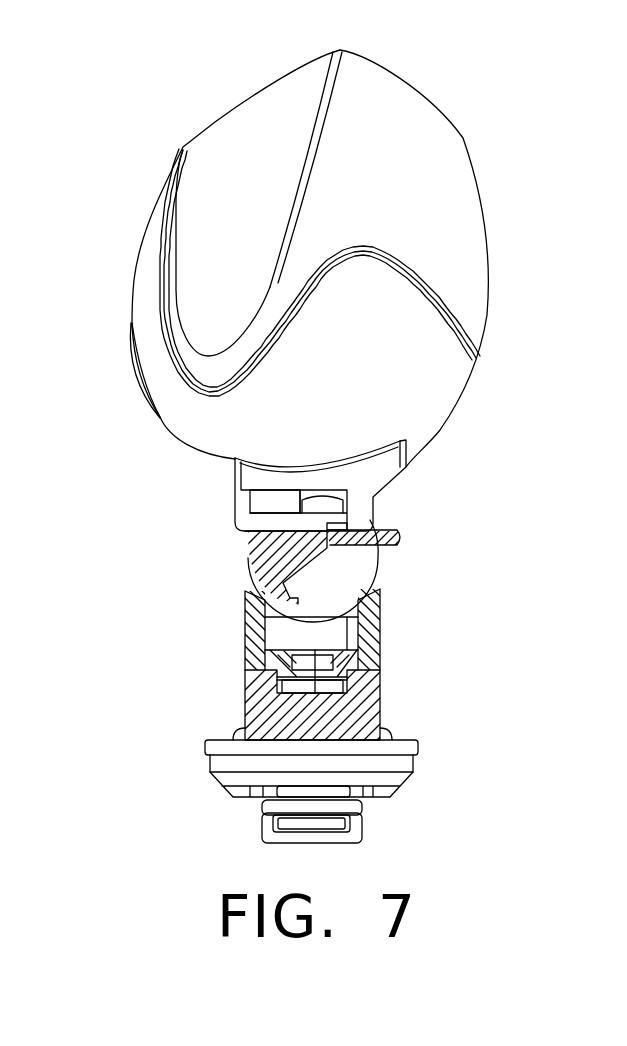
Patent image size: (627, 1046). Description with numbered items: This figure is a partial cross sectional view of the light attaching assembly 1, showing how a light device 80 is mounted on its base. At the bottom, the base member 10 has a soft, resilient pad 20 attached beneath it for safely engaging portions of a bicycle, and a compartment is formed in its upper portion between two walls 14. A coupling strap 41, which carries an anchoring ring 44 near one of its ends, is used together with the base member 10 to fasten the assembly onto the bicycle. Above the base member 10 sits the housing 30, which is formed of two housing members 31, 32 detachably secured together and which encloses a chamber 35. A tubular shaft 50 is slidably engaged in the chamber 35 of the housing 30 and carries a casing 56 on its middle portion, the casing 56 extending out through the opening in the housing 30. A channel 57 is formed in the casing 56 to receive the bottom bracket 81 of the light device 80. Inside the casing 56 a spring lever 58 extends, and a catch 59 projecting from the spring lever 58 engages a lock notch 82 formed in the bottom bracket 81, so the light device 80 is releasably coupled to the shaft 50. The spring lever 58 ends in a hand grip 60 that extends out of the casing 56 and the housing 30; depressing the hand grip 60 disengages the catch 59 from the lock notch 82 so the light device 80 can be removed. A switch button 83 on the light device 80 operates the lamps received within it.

The light attaching assembly 1 is at (532, 180).
The light device 80 is at (147, 258).
The lock notch 82 is at (333, 527).
The switch button 83 is at (137, 370).
The bottom bracket 81 is at (263, 497).
The channel 57 is at (268, 528).
The casing 56 is at (337, 510).
The catch 59 is at (340, 523).
The hand grip 60 is at (400, 537).
The shaft 50 is at (263, 552).
The spring lever 58 is at (370, 563).
The housing 30 is at (244, 597).
The housing member 31 is at (265, 626).
The housing member 32 is at (375, 618).
The chamber 35 is at (270, 650).
The base member 10 is at (253, 707).
The walls 14 is at (372, 688).
The pad 20 is at (213, 757).
The coupling strap 41 is at (287, 822).
The anchoring ring 44 is at (315, 838).